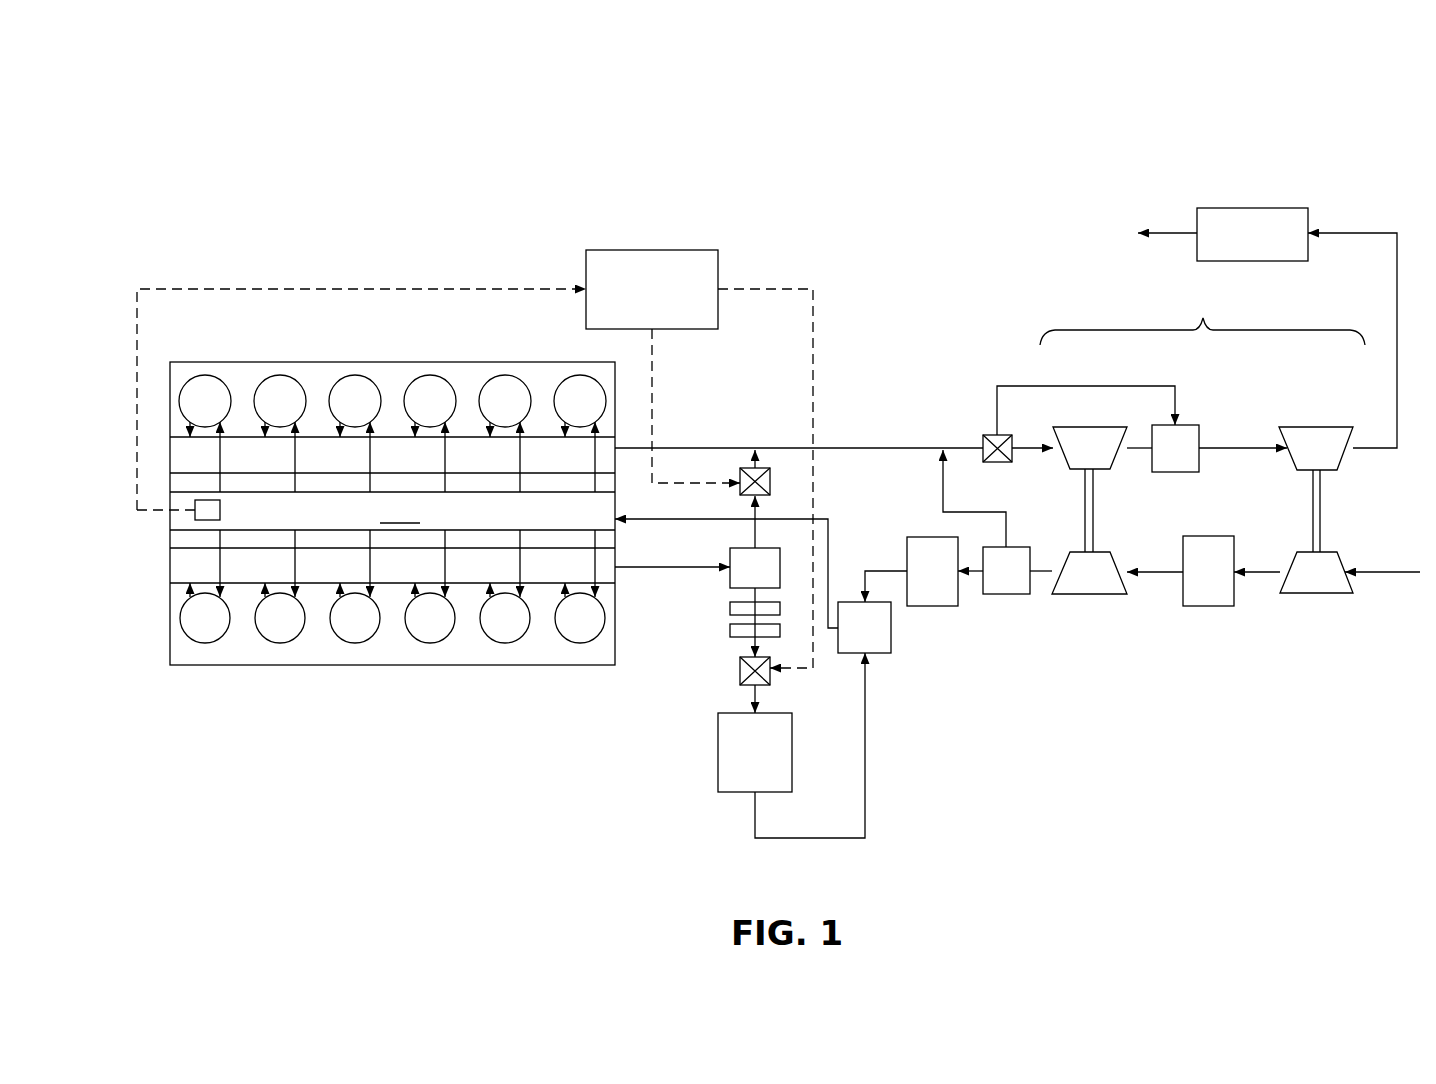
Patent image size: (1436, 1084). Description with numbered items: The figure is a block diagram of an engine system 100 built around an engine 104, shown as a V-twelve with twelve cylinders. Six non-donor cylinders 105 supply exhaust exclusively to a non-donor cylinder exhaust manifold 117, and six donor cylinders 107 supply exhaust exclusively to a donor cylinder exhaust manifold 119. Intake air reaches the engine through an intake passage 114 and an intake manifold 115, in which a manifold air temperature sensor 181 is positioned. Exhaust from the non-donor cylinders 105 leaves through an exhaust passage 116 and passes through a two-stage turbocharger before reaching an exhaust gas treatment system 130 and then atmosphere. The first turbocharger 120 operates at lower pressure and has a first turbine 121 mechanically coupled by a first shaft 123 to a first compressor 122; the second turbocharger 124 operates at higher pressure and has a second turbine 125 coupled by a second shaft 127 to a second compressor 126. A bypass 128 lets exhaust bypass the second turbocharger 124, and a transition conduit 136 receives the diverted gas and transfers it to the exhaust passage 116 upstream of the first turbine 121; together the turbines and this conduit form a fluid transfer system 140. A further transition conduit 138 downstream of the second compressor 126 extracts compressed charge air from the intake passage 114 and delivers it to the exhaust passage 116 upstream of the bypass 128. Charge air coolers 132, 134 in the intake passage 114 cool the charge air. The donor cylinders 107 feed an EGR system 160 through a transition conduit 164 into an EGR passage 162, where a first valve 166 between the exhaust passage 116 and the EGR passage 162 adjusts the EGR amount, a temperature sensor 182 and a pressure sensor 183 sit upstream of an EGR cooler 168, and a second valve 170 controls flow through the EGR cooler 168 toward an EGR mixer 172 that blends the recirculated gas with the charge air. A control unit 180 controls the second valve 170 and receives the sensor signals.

The engine system 100 is at (1033, 120).
The engine 104 is at (152, 628).
The non-donor cylinders 105 is at (350, 376).
The donor cylinders 107 is at (355, 643).
The intake passage 114 is at (1398, 572).
The intake manifold 115 is at (400, 511).
The exhaust passage 116 is at (893, 448).
The non-donor cylinder exhaust manifold 117 is at (170, 453).
The donor cylinder exhaust manifold 119 is at (170, 568).
The first turbocharger 120 is at (1340, 612).
The first turbine 121 is at (1315, 427).
The first compressor 122 is at (1318, 593).
The first shaft 123 is at (1322, 505).
The second turbocharger 124 is at (1105, 612).
The second turbine 125 is at (1097, 427).
The second compressor 126 is at (1072, 594).
The second shaft 127 is at (1093, 505).
The bypass 128 is at (1012, 462).
The exhaust gas treatment system 130 is at (1253, 208).
The charge air cooler 132 is at (1210, 606).
The charge air cooler 134 is at (932, 606).
The transition conduit 136 is at (1190, 425).
The transition conduit 138 is at (1006, 594).
The fluid transfer system 140 is at (1202, 313).
The EGR system 160 is at (877, 752).
The EGR passage 162 is at (742, 644).
The transition conduit 164 is at (730, 556).
The first valve 166 is at (770, 482).
The EGR cooler 168 is at (718, 752).
The second valve 170 is at (740, 673).
The EGR mixer 172 is at (847, 655).
The control unit 180 is at (652, 250).
The manifold air temperature sensor 181 is at (220, 510).
The temperature sensor 182 is at (730, 608).
The pressure sensor 183 is at (730, 630).